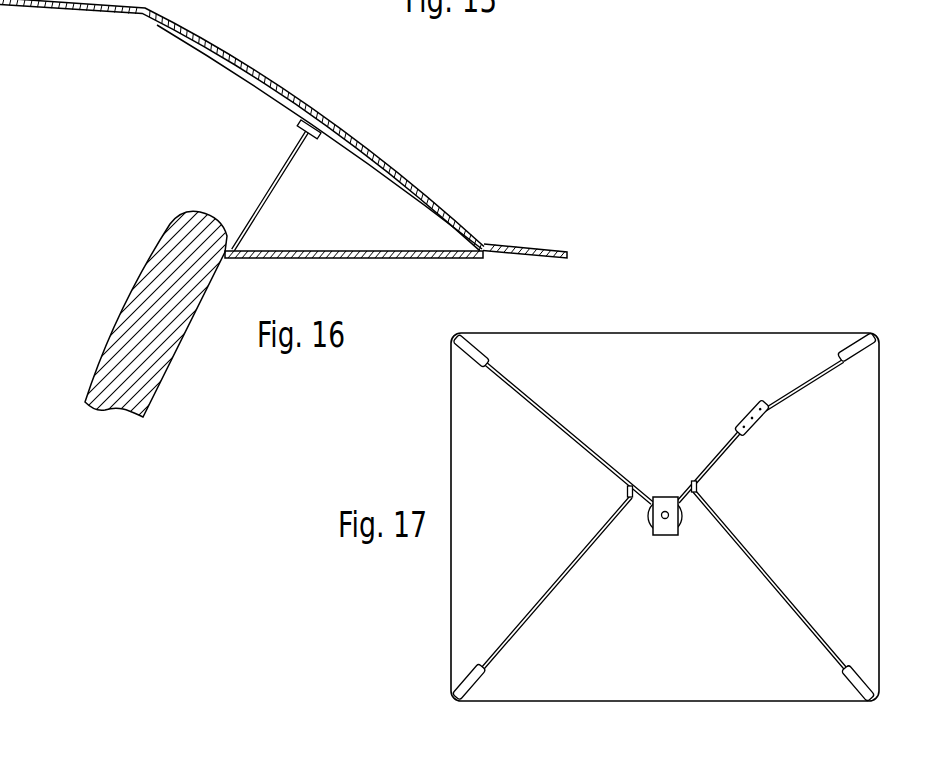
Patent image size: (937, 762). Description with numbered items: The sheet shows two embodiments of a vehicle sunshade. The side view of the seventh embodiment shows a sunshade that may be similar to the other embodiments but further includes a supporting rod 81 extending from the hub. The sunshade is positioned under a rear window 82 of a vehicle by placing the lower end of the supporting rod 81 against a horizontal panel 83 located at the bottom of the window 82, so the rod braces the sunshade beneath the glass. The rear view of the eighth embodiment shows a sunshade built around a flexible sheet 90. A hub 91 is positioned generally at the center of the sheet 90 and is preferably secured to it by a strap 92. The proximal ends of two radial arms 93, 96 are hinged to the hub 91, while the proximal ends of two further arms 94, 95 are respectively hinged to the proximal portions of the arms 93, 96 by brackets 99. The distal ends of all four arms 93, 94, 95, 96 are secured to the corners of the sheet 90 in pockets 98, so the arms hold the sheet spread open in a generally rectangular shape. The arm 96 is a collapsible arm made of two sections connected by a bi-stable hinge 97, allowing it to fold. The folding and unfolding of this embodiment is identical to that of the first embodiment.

In FIG. 16, the supporting rod 81 is at (270, 188).
In FIG. 16, the rear window 82 is at (373, 150).
In FIG. 16, the horizontal panel 83 is at (406, 259).
In FIG. 17, the flexible sheet 90 is at (666, 336).
In FIG. 17, the hub 91 is at (649, 521).
In FIG. 17, the strap 92 is at (665, 537).
In FIG. 17, the radial arm 93 is at (557, 432).
In FIG. 17, the arm 94 is at (553, 580).
In FIG. 17, the arm 95 is at (775, 573).
In FIG. 17, the collapsible arm 96 is at (715, 452).
In FIG. 17, the bi-stable hinge 97 is at (758, 424).
In FIG. 17, the pocket 98 is at (852, 363).
In FIG. 17, the bracket 99 is at (626, 491).